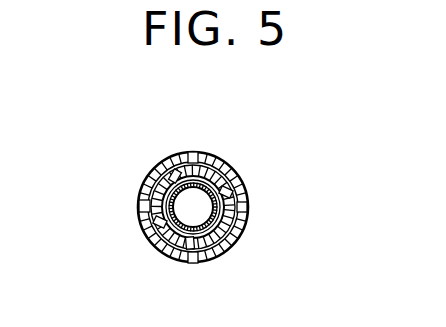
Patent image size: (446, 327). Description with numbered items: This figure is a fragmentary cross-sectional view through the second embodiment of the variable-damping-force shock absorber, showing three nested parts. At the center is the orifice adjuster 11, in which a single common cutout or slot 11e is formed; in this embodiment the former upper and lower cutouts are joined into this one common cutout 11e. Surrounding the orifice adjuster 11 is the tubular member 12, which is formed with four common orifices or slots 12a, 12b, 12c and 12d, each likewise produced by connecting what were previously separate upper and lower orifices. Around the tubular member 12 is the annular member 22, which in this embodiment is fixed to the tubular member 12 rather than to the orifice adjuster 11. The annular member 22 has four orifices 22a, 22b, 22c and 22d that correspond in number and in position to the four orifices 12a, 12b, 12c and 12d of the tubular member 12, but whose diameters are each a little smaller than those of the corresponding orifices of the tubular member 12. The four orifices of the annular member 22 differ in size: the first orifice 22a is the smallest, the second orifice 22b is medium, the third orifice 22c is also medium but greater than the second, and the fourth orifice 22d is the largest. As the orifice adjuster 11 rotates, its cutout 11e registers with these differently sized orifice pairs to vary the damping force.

The orifice adjuster 11 is at (153, 167).
The common cutout 11e is at (142, 182).
The tubular member 12 is at (223, 167).
The first orifice of tubular member 12a is at (194, 260).
The second orifice of tubular member 12b is at (245, 212).
The third orifice of tubular member 12c is at (193, 152).
The fourth orifice of tubular member 12d is at (140, 206).
The annular member 22 is at (228, 248).
The first orifice of annular member 22a is at (172, 260).
The second orifice of annular member 22b is at (224, 192).
The third orifice of annular member 22c is at (175, 170).
The fourth orifice of annular member 22d is at (158, 226).